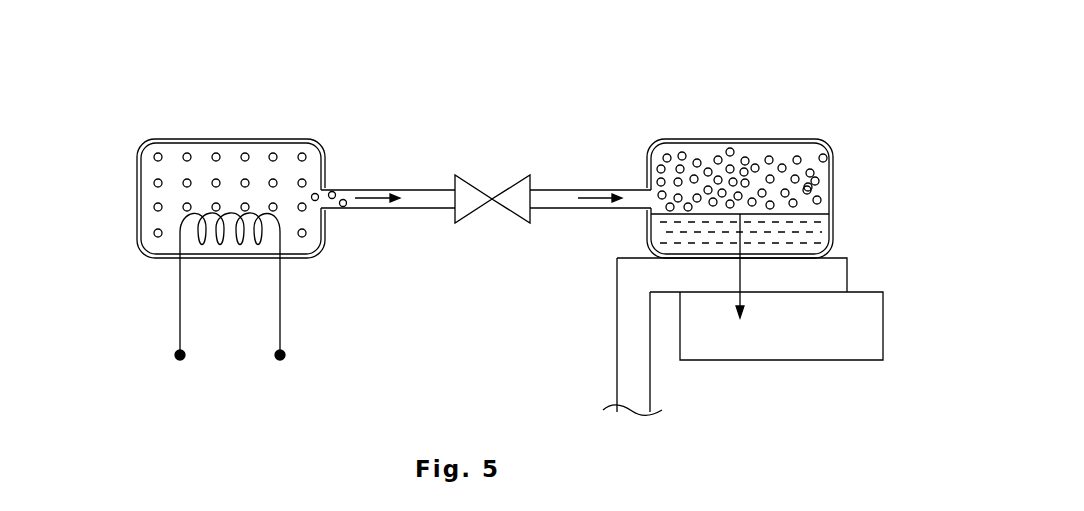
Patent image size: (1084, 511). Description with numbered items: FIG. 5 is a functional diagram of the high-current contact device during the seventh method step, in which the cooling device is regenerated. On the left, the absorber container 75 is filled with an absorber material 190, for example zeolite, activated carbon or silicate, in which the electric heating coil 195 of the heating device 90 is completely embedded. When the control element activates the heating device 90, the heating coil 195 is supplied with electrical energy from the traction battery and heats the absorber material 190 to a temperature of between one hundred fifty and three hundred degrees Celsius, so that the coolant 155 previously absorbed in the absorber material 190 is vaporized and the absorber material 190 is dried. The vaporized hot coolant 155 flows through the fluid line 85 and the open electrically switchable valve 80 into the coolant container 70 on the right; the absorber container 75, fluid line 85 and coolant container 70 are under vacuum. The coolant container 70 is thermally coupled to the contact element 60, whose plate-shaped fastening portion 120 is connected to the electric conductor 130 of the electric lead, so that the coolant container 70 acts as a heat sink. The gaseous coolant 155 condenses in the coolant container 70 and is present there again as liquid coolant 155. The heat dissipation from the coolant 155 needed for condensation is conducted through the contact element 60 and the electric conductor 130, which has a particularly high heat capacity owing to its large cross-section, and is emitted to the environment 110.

The environment 110 is at (508, 43).
The absorber container 75 is at (227, 138).
The absorber material 190 is at (303, 152).
The electric heating coil 195 is at (282, 238).
The heating device 90 is at (176, 368).
The coolant 155 is at (370, 198).
The electrically switchable valve 80 is at (492, 198).
The fluid line 85 is at (567, 210).
The coolant container 70 is at (765, 137).
The fastening portion 120 is at (833, 275).
The contact element 60 is at (628, 365).
The electric conductor 130 is at (857, 350).